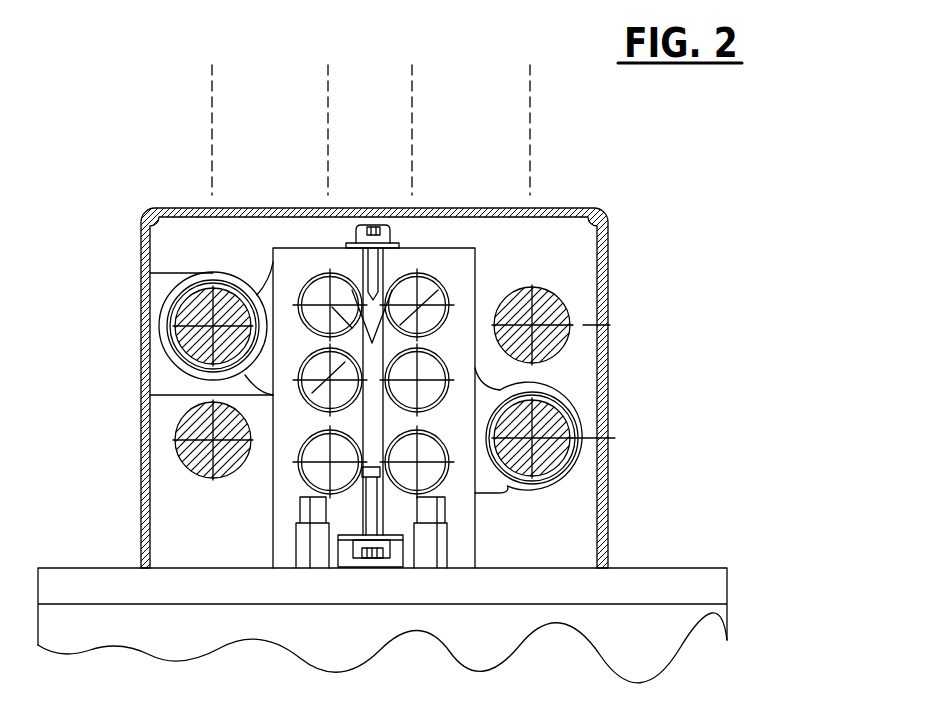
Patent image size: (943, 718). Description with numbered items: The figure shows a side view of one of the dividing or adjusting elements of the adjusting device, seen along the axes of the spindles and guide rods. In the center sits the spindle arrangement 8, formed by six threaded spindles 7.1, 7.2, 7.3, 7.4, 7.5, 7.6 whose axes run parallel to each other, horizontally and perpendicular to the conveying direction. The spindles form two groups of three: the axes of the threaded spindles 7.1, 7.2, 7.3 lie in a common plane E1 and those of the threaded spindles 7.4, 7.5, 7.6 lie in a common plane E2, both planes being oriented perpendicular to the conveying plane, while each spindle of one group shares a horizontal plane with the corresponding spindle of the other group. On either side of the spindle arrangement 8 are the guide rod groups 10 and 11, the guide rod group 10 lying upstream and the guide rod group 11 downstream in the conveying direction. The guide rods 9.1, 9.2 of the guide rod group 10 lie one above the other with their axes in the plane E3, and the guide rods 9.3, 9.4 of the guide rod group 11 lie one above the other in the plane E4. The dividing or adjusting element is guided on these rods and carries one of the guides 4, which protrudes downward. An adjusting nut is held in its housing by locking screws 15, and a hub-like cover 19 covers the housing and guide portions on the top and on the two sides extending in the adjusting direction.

The guide 4 is at (652, 632).
The threaded spindle 7.1 is at (318, 292).
The threaded spindle 7.2 is at (320, 395).
The threaded spindle 7.3 is at (372, 425).
The threaded spindle 7.4 is at (433, 290).
The threaded spindle 7.5 is at (420, 369).
The threaded spindle 7.6 is at (395, 448).
The spindle arrangement 8 is at (383, 394).
The guide rod 9.1 is at (207, 293).
The guide rod 9.2 is at (200, 455).
The guide rod 9.3 is at (552, 305).
The guide rod 9.4 is at (540, 469).
The guide rod group 10 is at (167, 459).
The guide rod group 11 is at (611, 466).
The locking screw 15 is at (373, 225).
The hub-like cover 19 is at (574, 208).
The plane E1 is at (323, 109).
The plane E2 is at (403, 109).
The plane E3 is at (207, 109).
The plane E4 is at (523, 109).